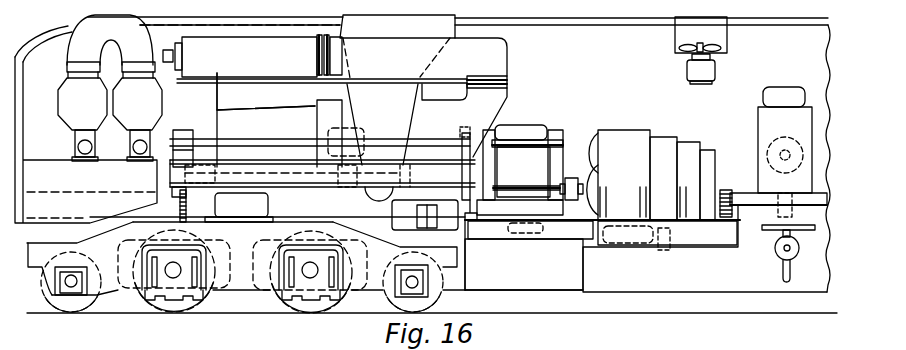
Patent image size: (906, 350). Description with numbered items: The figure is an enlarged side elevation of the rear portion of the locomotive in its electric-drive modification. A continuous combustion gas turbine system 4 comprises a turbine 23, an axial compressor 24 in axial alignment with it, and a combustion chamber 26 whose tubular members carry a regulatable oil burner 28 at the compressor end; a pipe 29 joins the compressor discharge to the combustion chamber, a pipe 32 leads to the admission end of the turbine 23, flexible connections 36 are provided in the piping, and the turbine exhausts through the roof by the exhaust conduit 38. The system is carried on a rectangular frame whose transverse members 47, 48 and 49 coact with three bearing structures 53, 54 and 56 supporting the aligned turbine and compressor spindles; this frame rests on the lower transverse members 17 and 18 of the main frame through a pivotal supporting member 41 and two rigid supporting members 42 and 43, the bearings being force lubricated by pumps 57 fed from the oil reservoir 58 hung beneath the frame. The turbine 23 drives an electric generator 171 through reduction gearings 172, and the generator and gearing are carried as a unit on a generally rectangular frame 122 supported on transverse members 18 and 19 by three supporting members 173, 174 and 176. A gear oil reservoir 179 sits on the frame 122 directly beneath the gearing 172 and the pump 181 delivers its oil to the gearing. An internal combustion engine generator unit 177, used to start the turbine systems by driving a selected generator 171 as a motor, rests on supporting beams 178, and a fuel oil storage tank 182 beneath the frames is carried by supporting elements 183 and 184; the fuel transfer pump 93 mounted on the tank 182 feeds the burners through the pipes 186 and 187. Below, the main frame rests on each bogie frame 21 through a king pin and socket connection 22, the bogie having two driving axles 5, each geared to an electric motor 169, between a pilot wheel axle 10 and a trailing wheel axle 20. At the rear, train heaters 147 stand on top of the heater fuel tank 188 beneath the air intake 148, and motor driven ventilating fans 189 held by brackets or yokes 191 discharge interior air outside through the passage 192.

The continuous combustion gas turbine system 4 is at (314, 98).
The driving axles 5 is at (172, 266).
The pilot wheel axle 10 is at (412, 275).
The lower transverse spacing and reinforcing member 17 is at (190, 206).
The lower transverse spacing and reinforcing member 18 is at (468, 203).
The lower transverse spacing and reinforcing member 19 is at (726, 191).
The trailing wheel axle 20 is at (71, 295).
The bogie frame 21 is at (28, 248).
The king pin and socket connection 22 is at (249, 212).
The turbine 23 is at (426, 100).
The axial compressor 24 is at (283, 104).
The combustion chamber 26 is at (268, 59).
The oil burner 28 is at (168, 50).
The pipe 29 is at (217, 104).
The pipe 32 is at (500, 99).
The flexible portions or connections 36 is at (316, 62).
The exhaust conduit 38 is at (397, 26).
The supporting member 41 is at (173, 189).
The supporting member 42 is at (526, 178).
The supporting member 43 is at (479, 187).
The transverse member 47 is at (188, 170).
The transverse member 48 is at (358, 172).
The transverse member 49 is at (488, 133).
The bearing structure 53 is at (175, 140).
The bearing structure 54 is at (352, 136).
The bearing structure 56 is at (493, 137).
The pumps 57 is at (408, 170).
The oil reservoir 58 is at (357, 215).
The fuel transfer pump 93 is at (778, 253).
The generally rectangular frame 122 is at (590, 237).
The train heaters 147 is at (110, 116).
The air intake duct 148 is at (85, 43).
The electric motor 169 is at (126, 291).
The electric generator 171 is at (631, 131).
The reduction gearings 172 is at (545, 120).
The supporting member 173 is at (470, 227).
The supporting member 174 is at (484, 255).
The supporting member 176 is at (688, 234).
The internal combustion engine generator unit 177 is at (758, 116).
The supporting beams 178 is at (793, 205).
The gear oil reservoir 179 is at (510, 287).
The pump 181 is at (498, 217).
The fuel oil storage tank 182 is at (680, 289).
The supporting element 183 is at (786, 177).
The supporting element 184 is at (665, 252).
The pipe 186 is at (783, 276).
The pipe 187 is at (782, 236).
The heater fuel tank 188 is at (55, 157).
The motor driven ventilating fans 189 is at (716, 69).
The brackets or yokes 191 is at (727, 37).
The passage 192 is at (683, 20).